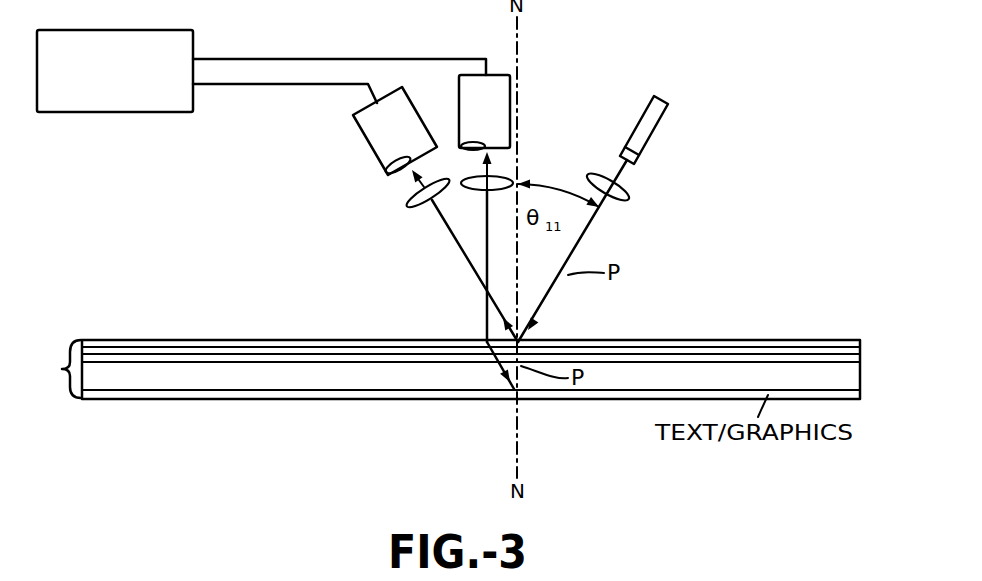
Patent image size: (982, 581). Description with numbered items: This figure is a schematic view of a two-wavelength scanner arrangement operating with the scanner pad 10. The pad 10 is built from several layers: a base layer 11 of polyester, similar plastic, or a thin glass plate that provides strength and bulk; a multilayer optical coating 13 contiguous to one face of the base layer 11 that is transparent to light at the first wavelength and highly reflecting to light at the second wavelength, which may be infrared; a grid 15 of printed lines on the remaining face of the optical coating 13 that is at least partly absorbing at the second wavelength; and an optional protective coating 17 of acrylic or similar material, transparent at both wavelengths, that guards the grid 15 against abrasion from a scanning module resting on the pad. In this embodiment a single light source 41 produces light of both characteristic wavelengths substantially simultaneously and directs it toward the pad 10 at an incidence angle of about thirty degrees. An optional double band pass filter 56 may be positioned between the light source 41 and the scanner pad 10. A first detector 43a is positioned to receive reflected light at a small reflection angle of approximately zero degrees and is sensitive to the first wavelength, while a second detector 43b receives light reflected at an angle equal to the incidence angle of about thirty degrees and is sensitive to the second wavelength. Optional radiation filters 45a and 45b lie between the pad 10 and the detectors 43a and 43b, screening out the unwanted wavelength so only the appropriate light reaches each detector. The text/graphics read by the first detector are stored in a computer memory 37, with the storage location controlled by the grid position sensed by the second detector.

The computer memory 37 is at (108, 110).
The first detector 43a is at (492, 90).
The second detector 43b is at (378, 128).
The radiation filter 45a is at (469, 190).
The radiation filter 45b is at (428, 203).
The single light source 41 is at (634, 147).
The double band pass filter 56 is at (634, 193).
The scanner pad apparatus 10 is at (442, 369).
The protective coating 17 is at (768, 342).
The grid 15 is at (808, 352).
The multilayer optical coating 13 is at (860, 358).
The base layer 11 is at (852, 378).